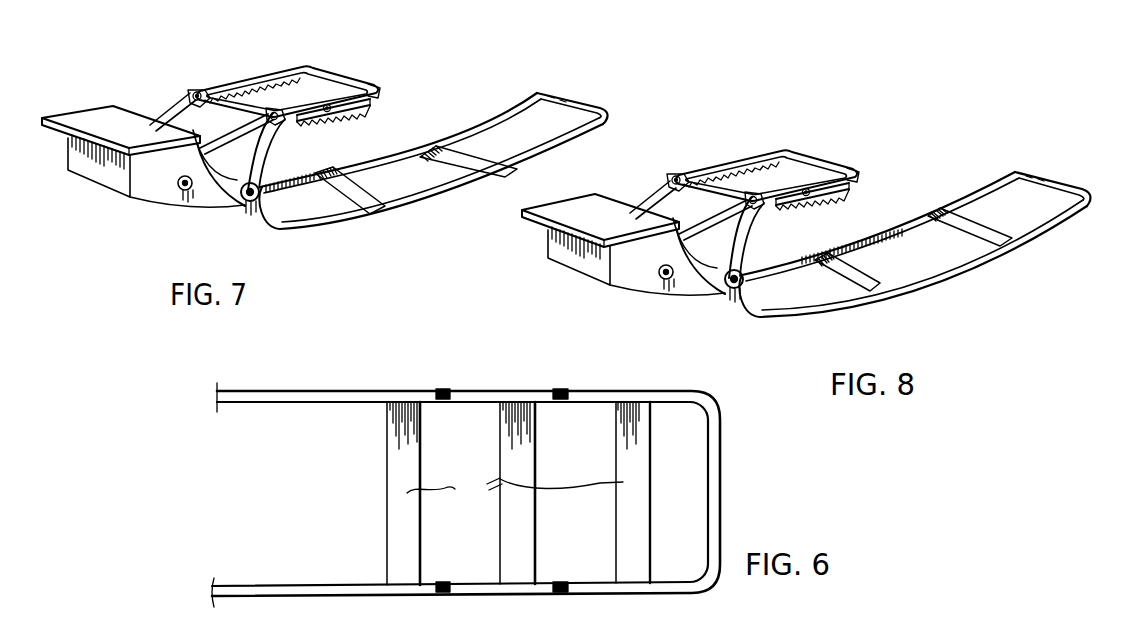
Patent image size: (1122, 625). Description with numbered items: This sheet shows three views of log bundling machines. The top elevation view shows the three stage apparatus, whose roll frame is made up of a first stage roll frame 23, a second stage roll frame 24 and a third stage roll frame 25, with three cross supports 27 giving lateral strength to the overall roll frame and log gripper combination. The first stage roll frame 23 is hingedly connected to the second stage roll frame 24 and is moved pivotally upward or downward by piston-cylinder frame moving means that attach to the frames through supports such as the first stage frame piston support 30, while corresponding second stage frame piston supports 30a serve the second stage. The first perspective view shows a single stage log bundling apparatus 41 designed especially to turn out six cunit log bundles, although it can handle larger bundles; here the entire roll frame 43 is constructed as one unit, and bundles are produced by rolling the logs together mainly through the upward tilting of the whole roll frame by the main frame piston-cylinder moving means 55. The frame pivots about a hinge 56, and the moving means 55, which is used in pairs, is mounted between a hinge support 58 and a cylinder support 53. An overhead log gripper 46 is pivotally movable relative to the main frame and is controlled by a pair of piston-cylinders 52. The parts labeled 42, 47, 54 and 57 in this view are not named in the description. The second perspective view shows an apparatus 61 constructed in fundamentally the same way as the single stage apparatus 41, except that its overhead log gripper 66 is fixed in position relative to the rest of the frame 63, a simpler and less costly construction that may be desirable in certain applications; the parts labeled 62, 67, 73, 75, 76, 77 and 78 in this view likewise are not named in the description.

In FIG. 6, the first stage roll frame 23 is at (618, 396).
In FIG. 6, the second stage roll frame 24 is at (467, 396).
In FIG. 6, the third stage roll frame 25 is at (330, 394).
In FIG. 6, the cross supports 27 is at (515, 486).
In FIG. 6, the first stage frame piston support 30 is at (555, 582).
In FIG. 6, the second stage frame piston supports 30a is at (444, 582).
In FIG. 7, the log bundling apparatus 41 is at (445, 177).
In FIG. 7, the mounting base 42 is at (153, 190).
In FIG. 7, the roll frame 43 is at (590, 110).
In FIG. 7, the overhead log gripper 46 is at (363, 88).
In FIG. 7, the cross slat 47 is at (500, 167).
In FIG. 7, the piston-cylinders 52 is at (210, 92).
In FIG. 7, the cylinder support 53 is at (200, 91).
In FIG. 7, the corner bracket 54 is at (377, 97).
In FIG. 7, the main frame piston-cylinder moving means 55 is at (170, 108).
In FIG. 7, the hinge 56 is at (260, 203).
In FIG. 7, the serrated bar 57 is at (337, 120).
In FIG. 7, the hinge support 58 is at (193, 203).
In FIG. 8, the apparatus 61 is at (906, 223).
In FIG. 8, the mounting base 62 is at (623, 254).
In FIG. 8, the frame 63 is at (1053, 172).
In FIG. 8, the overhead log gripper 66 is at (771, 194).
In FIG. 8, the cross slat 67 is at (882, 188).
In FIG. 8, the pivot bracket 73 is at (736, 179).
In FIG. 8, the link arm 75 is at (644, 185).
In FIG. 8, the pivot bolt 76 is at (731, 308).
In FIG. 8, the serrated bar 77 is at (822, 199).
In FIG. 8, the mounting bolt 78 is at (661, 300).